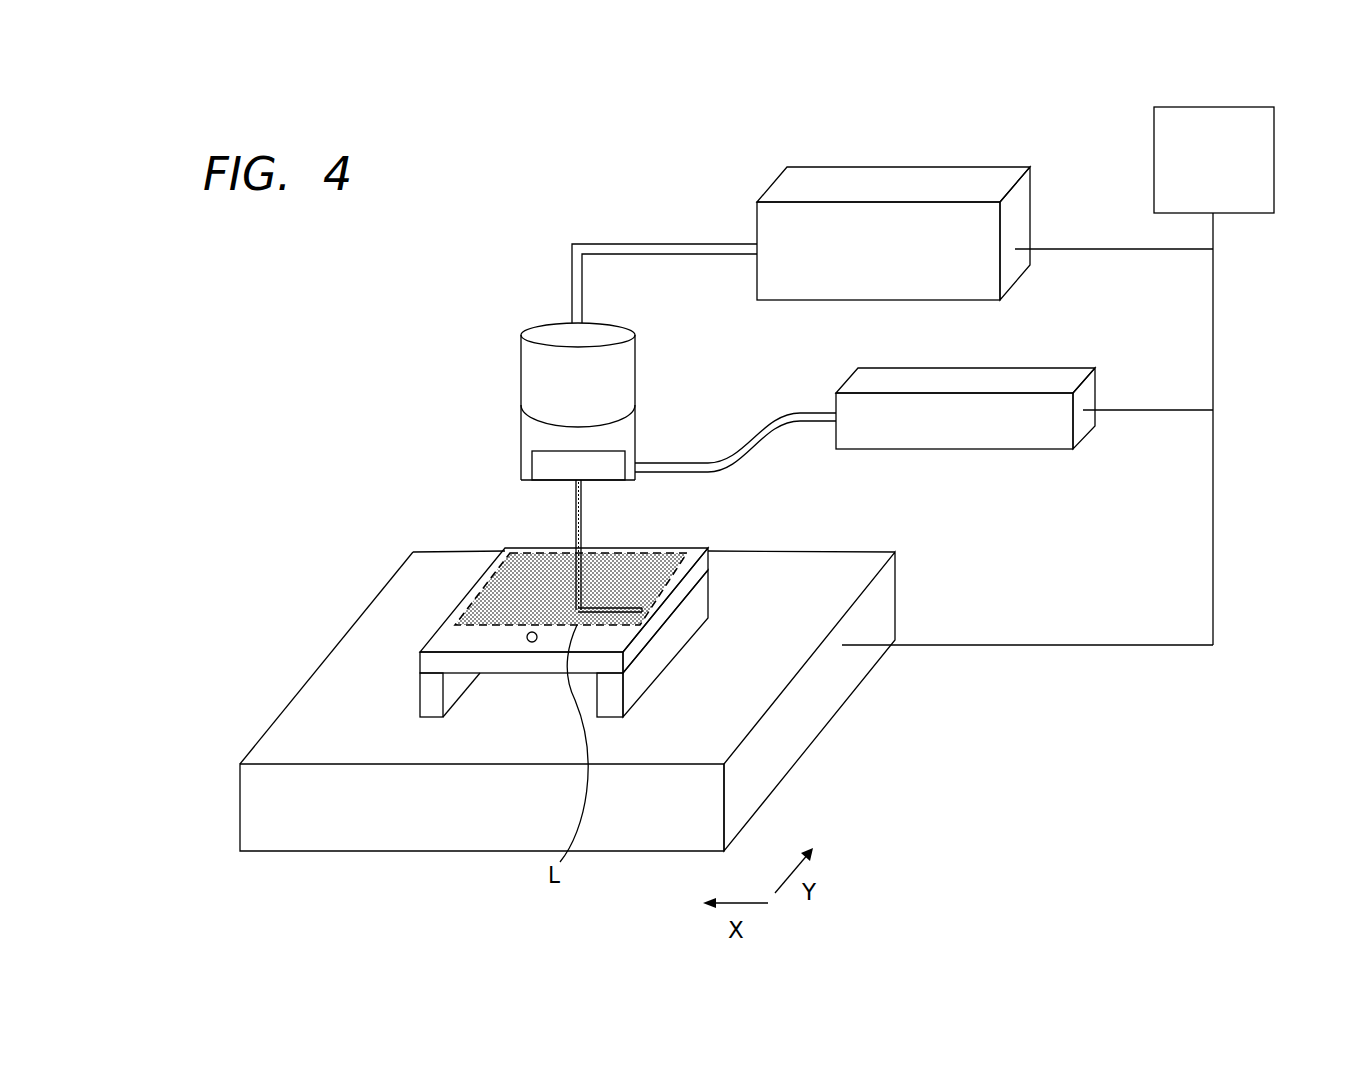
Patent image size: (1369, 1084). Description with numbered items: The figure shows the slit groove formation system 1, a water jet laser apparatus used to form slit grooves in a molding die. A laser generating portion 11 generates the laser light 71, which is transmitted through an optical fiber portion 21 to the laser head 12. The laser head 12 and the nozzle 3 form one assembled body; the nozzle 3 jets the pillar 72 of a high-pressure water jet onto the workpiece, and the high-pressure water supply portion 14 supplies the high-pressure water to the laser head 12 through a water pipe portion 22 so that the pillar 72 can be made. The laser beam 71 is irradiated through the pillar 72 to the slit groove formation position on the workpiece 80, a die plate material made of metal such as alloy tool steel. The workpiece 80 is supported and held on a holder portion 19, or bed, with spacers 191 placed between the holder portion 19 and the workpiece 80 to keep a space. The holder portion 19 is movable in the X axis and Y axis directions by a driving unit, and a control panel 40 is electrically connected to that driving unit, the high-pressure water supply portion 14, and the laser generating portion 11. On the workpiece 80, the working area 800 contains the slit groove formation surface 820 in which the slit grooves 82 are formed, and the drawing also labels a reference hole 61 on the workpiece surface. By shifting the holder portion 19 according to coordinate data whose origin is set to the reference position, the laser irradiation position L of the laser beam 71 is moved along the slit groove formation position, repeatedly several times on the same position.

The slit groove formation system 1 is at (668, 230).
The laser generating portion 11 is at (970, 173).
The laser head 12 is at (535, 366).
The nozzle 3 is at (540, 466).
The optical fiber portion 21 is at (590, 248).
The water pipe portion 22 is at (697, 465).
The high-pressure water supply portion 14 is at (1048, 378).
The control panel 40 is at (1275, 133).
The holder portion 19 is at (848, 675).
The workpiece 80 is at (654, 734).
The working area 800 is at (497, 572).
The slit groove formation surface 820 is at (608, 642).
The slit groove 82 is at (626, 613).
The reference hole 61 is at (527, 636).
The spacer 191 is at (429, 694).
The pillar of a high-pressure water jet 72 is at (575, 522).
The laser light 71 is at (576, 592).